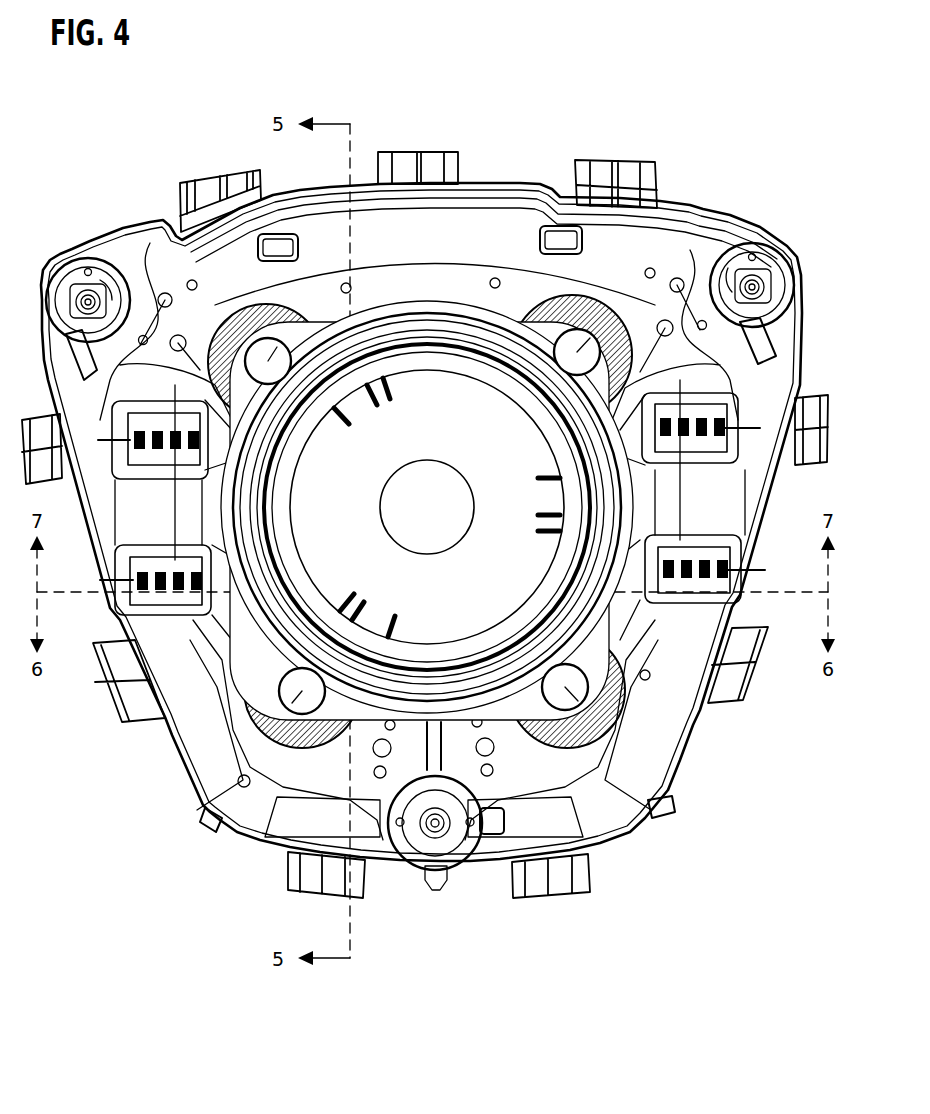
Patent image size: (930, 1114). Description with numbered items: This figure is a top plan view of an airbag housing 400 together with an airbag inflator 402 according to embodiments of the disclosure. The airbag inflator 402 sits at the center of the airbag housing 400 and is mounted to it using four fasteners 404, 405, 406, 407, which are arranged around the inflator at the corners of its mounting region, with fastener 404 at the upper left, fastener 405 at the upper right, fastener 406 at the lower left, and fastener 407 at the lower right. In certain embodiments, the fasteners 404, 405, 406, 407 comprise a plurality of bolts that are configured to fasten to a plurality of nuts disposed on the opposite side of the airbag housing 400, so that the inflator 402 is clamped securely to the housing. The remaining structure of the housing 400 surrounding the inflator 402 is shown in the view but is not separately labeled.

The airbag housing 400 is at (133, 170).
The airbag inflator 402 is at (458, 390).
The fastener 404 is at (274, 346).
The fastener 405 is at (612, 308).
The fastener 406 is at (247, 786).
The fastener 407 is at (627, 725).